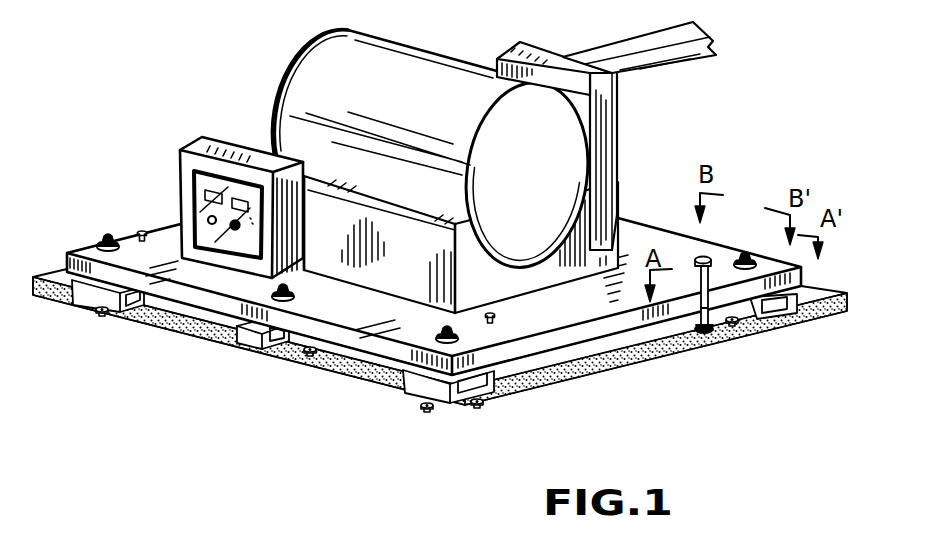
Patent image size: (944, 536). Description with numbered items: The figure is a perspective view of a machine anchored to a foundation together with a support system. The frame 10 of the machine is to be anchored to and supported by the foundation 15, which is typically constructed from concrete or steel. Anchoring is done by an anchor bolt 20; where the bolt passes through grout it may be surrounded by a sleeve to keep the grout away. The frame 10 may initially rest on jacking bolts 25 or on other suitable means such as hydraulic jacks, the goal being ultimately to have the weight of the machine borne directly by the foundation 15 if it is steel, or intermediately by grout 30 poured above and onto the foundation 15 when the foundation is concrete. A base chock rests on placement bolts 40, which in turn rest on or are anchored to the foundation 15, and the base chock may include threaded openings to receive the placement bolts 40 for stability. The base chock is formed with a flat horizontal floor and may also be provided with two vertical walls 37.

The frame 10 is at (647, 233).
The foundation 15 is at (636, 424).
The anchor bolt 20 is at (747, 256).
The jacking bolt 25 is at (700, 256).
The grout 30 is at (848, 299).
The vertical wall 37 is at (90, 298).
The placement bolt 40 is at (428, 412).